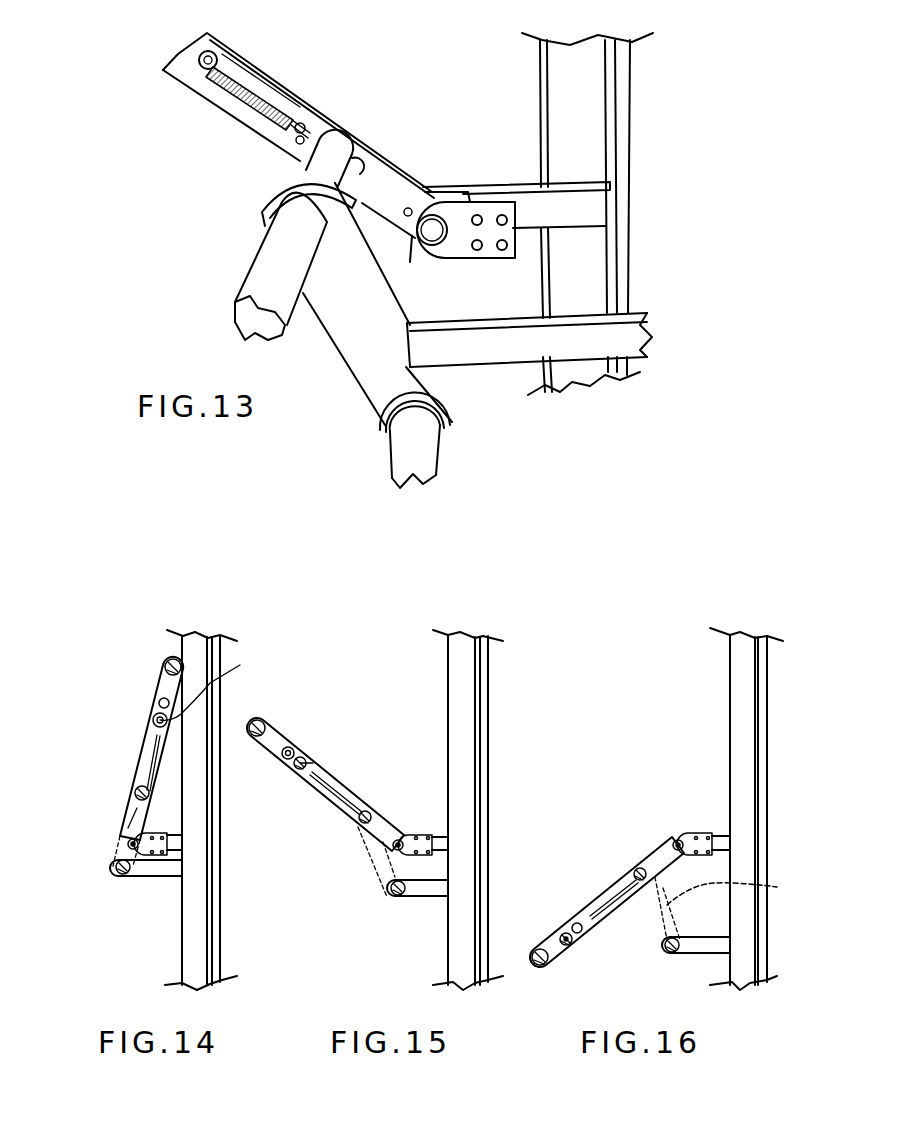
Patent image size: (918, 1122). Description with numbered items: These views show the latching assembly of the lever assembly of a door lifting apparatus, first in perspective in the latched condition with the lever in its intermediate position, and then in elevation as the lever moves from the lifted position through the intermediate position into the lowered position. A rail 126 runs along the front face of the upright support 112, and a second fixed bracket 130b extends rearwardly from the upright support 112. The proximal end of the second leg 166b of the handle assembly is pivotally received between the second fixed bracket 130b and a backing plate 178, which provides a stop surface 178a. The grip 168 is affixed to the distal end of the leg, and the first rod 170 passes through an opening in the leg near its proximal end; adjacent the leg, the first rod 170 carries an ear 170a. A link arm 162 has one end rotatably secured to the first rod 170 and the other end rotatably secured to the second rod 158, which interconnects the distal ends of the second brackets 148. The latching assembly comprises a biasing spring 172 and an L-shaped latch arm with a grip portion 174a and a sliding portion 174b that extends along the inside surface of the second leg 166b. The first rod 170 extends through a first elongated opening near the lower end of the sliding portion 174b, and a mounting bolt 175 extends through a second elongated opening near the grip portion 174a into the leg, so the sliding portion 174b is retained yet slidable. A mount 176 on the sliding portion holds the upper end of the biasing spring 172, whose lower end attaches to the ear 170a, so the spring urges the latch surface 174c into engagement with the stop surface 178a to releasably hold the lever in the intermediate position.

In FIG. 13, the upright support 112 is at (558, 378).
In FIG. 13, the rail 126 is at (632, 63).
In FIG. 13, the second fixed bracket 130b is at (527, 202).
In FIG. 14, the second fixed bracket 130b is at (173, 835).
In FIG. 15, the second fixed bracket 130b is at (442, 835).
In FIG. 16, the second fixed bracket 130b is at (722, 833).
In FIG. 13, the second bracket 148 is at (625, 337).
In FIG. 14, the second bracket 148 is at (153, 876).
In FIG. 15, the second bracket 148 is at (418, 898).
In FIG. 16, the second bracket 148 is at (705, 940).
In FIG. 13, the second rod 158 is at (432, 470).
In FIG. 13, the link arm 162 is at (365, 388).
In FIG. 15, the link arm 162 is at (367, 853).
In FIG. 16, the link arm 162 is at (737, 908).
In FIG. 13, the second leg 166b is at (423, 187).
In FIG. 14, the second leg 166b is at (160, 700).
In FIG. 14, the grip 168 is at (165, 665).
In FIG. 15, the grip 168 is at (253, 735).
In FIG. 16, the grip 168 is at (537, 963).
In FIG. 13, the first rod 170 is at (254, 263).
In FIG. 14, the first rod 170 is at (136, 792).
In FIG. 15, the first rod 170 is at (365, 817).
In FIG. 16, the first rod 170 is at (640, 874).
In FIG. 13, the ear 170a is at (300, 140).
In FIG. 13, the biasing spring 172 is at (252, 102).
In FIG. 14, the biasing spring 172 is at (152, 750).
In FIG. 15, the biasing spring 172 is at (333, 787).
In FIG. 16, the biasing spring 172 is at (608, 893).
In FIG. 14, the grip portion 174a is at (154, 716).
In FIG. 15, the grip portion 174a is at (290, 748).
In FIG. 16, the grip portion 174a is at (570, 945).
In FIG. 13, the sliding portion 174b is at (263, 84).
In FIG. 14, the sliding portion 174b is at (147, 773).
In FIG. 15, the sliding portion 174b is at (315, 763).
In FIG. 16, the sliding portion 174b is at (600, 897).
In FIG. 13, the latch surface 174c is at (406, 215).
In FIG. 15, the mounting bolt 175 is at (296, 767).
In FIG. 16, the mounting bolt 175 is at (585, 935).
In FIG. 13, the mount 176 is at (222, 38).
In FIG. 13, the backing plate 178 is at (508, 232).
In FIG. 14, the backing plate 178 is at (173, 850).
In FIG. 15, the backing plate 178 is at (437, 842).
In FIG. 16, the backing plate 178 is at (713, 842).
In FIG. 13, the stop surface 178a is at (409, 260).